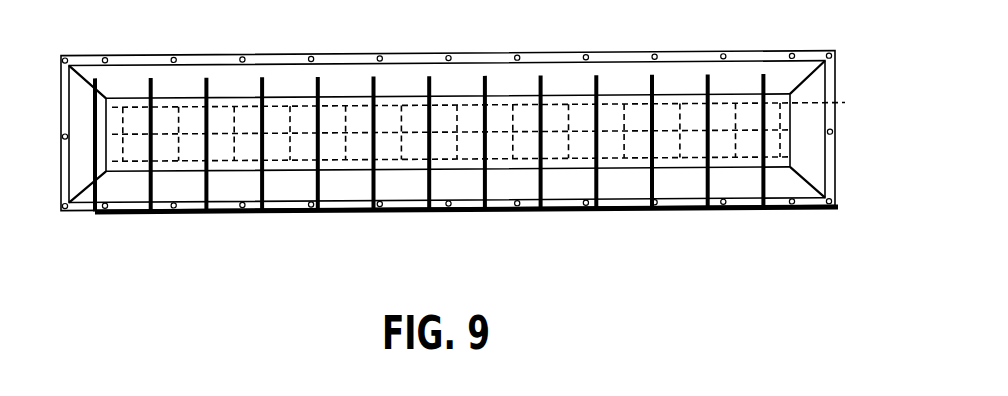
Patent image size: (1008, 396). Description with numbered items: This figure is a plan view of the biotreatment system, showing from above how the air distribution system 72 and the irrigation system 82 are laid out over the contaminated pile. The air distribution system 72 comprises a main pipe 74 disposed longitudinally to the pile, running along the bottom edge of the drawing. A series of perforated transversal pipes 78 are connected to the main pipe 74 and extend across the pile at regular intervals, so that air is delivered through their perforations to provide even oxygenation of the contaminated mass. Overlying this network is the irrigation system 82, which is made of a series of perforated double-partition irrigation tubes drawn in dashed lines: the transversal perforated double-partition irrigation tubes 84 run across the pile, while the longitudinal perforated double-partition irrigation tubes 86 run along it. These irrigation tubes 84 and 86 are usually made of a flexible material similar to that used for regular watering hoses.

The air distribution system 72 is at (836, 209).
The main pipe 74 is at (356, 215).
The perforated transversal pipes 78 is at (485, 182).
The irrigation system 82 is at (838, 103).
The transversal perforated double-partition irrigation tubes 84 is at (411, 106).
The longitudinal perforated double-partition irrigation tubes 86 is at (462, 127).